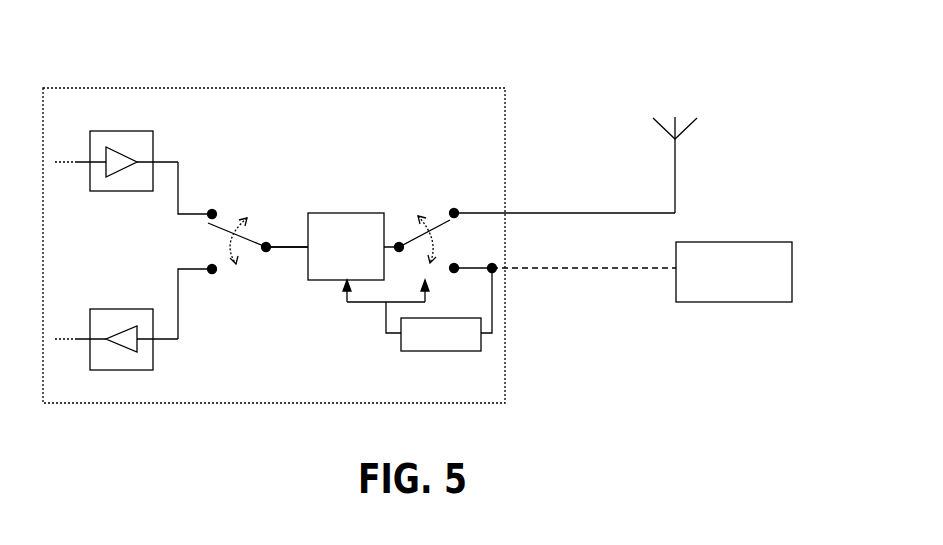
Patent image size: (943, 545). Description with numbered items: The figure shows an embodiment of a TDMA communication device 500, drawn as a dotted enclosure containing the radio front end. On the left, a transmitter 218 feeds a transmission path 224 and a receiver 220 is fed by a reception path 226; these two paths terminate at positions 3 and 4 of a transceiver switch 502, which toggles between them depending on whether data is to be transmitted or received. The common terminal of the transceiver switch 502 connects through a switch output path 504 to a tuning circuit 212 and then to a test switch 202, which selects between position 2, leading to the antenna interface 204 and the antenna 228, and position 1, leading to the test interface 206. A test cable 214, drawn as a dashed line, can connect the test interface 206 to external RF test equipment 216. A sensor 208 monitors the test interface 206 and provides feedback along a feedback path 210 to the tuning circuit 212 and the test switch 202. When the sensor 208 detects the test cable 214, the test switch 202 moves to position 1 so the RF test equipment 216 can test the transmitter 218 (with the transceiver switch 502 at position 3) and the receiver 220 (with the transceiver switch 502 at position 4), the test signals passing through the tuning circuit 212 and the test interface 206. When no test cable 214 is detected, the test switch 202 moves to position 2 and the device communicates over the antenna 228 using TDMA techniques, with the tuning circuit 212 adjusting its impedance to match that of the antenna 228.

The TDMA communication device 500 is at (275, 88).
The transmitter 218 is at (123, 131).
The transmission path 224 is at (178, 162).
The receiver 220 is at (122, 370).
The reception path 226 is at (178, 339).
The position "3" of transceiver switch 3 is at (203, 207).
The position "4" of transceiver switch 4 is at (203, 261).
The transceiver switch 502 is at (238, 272).
The switch output path 504 is at (298, 246).
The tuning circuit 212 is at (347, 213).
The test switch 202 is at (425, 205).
The position "2" of test switch 2 is at (458, 205).
The position "1" of test switch 1 is at (458, 260).
The antenna interface 204 is at (512, 206).
The test interface 206 is at (512, 275).
The test cable 214 is at (569, 267).
The antenna 228 is at (683, 117).
The RF test equipment 216 is at (735, 242).
The feedback path 210 is at (372, 303).
The sensor 208 is at (438, 351).